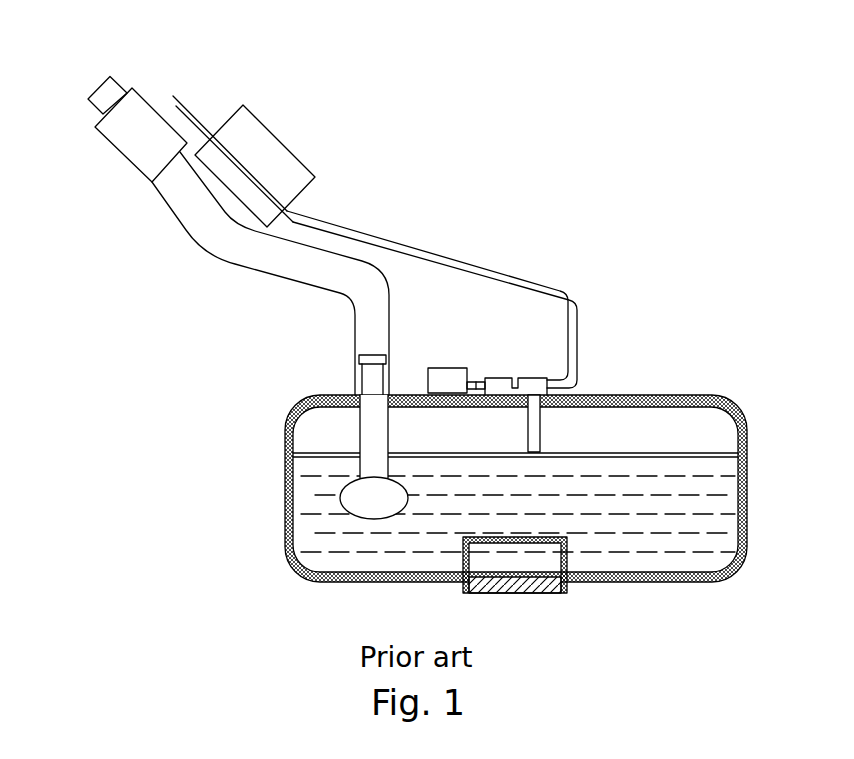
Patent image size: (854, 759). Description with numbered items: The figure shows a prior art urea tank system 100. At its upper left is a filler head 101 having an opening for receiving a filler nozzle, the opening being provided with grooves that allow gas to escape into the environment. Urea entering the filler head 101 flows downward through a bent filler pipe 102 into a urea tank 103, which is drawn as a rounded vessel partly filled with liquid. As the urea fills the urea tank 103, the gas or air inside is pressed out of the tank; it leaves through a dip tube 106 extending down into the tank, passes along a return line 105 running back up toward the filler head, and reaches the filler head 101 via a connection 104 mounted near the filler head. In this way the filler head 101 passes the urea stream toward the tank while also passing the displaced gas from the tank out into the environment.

The urea tank system 100 is at (224, 507).
The filler head 101 is at (118, 128).
The filler pipe 102 is at (247, 265).
The urea tank 103 is at (676, 389).
The connection 104 is at (170, 100).
The return line 105 is at (313, 221).
The dip tube 106 is at (541, 436).